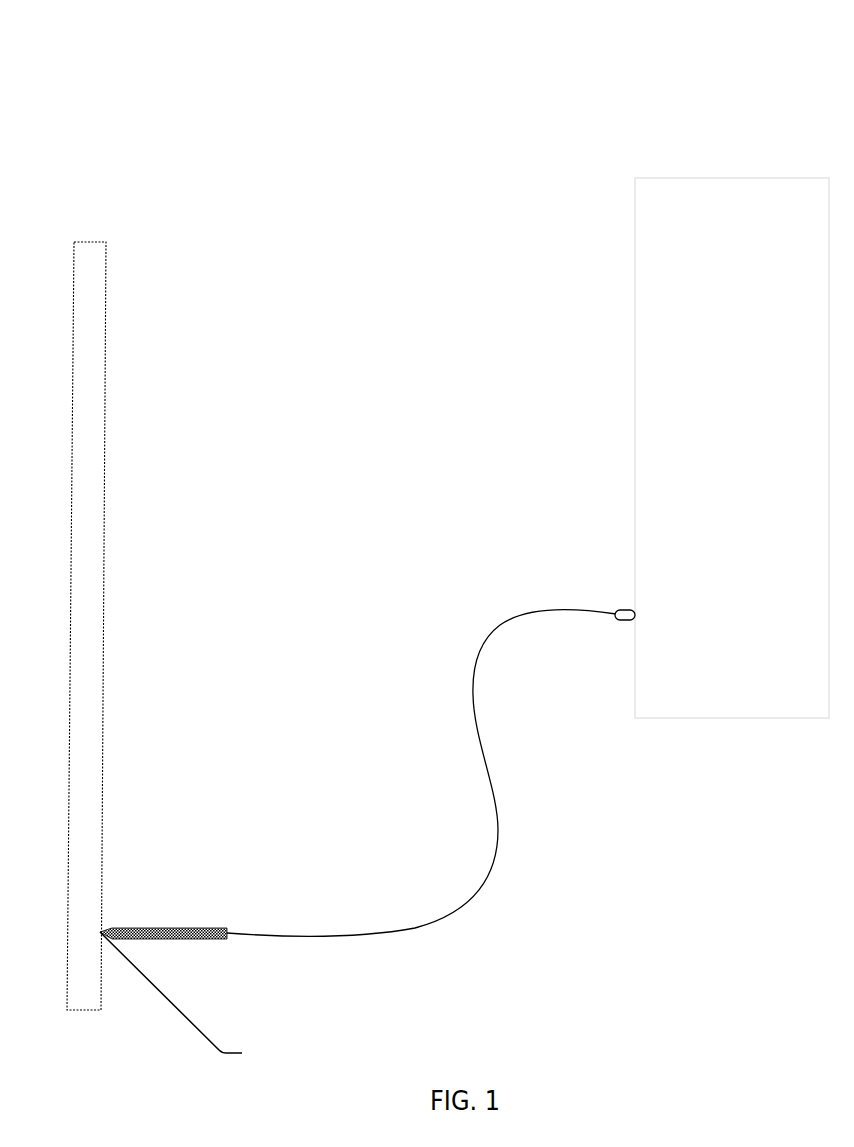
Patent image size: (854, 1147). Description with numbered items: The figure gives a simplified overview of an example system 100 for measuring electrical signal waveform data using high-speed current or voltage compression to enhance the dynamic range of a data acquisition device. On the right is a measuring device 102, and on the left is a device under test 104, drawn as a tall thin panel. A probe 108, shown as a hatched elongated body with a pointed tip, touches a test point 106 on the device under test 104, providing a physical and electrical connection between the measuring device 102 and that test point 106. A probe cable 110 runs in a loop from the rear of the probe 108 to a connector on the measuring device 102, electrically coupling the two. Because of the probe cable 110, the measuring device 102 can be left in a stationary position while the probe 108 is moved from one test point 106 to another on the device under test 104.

The system 100 is at (683, 50).
The measuring device 102 is at (748, 175).
The device under test 104 is at (105, 312).
The test point 106 is at (190, 998).
The probe 108 is at (180, 927).
The probe cable 110 is at (493, 790).